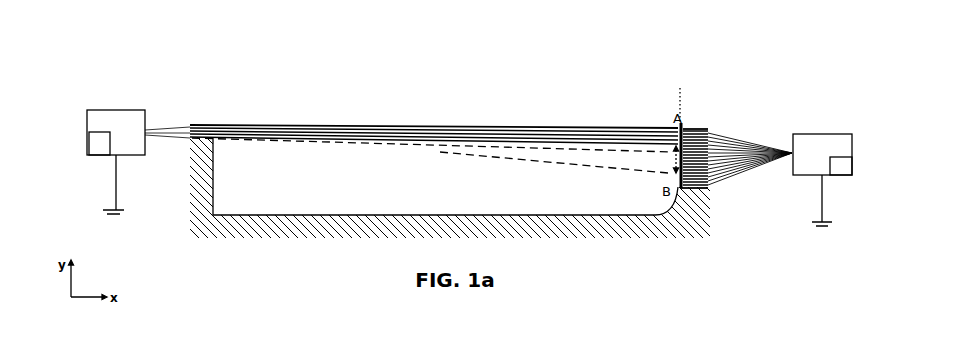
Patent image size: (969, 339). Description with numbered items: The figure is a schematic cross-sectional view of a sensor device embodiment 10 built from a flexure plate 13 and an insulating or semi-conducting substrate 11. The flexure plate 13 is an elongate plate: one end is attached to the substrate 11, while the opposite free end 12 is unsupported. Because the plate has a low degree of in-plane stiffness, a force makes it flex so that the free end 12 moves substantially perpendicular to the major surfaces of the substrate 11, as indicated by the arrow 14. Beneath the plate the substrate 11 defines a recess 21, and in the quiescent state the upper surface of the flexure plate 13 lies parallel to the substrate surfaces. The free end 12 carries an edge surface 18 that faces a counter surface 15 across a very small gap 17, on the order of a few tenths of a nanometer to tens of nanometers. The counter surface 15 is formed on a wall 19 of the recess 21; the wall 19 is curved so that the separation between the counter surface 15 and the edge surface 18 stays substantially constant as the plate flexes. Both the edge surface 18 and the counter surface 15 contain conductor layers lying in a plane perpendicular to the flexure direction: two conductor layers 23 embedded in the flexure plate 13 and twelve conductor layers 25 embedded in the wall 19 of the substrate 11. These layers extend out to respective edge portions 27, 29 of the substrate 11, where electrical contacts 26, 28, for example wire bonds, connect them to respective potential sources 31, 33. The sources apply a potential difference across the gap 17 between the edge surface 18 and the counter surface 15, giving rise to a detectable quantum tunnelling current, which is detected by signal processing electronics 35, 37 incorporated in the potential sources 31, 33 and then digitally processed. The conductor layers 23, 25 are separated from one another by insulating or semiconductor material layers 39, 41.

The embodiment 10 is at (423, 105).
The substrate 11 is at (233, 222).
The free end 12 is at (666, 148).
The flexure plate 13 is at (498, 126).
The arrow 14 is at (668, 170).
The counter surface 15 is at (675, 197).
The gap 17 is at (680, 90).
The edge surface 18 is at (682, 130).
The wall 19 is at (692, 200).
The recess 21 is at (332, 200).
The conductor layers 23 is at (189, 150).
The conductor layers 25 is at (703, 132).
The electrical contacts 26 is at (172, 128).
The edge portion 27 is at (188, 124).
The electrical contacts 28 is at (743, 160).
The edge portion 29 is at (715, 190).
The potential source 31 is at (99, 110).
The potential source 33 is at (837, 134).
The signal processing electronics 35 is at (104, 143).
The signal processing electronics 37 is at (842, 167).
The insulating or semiconductor material layers 39 is at (218, 125).
The insulating or semiconductor material layers 41 is at (722, 143).